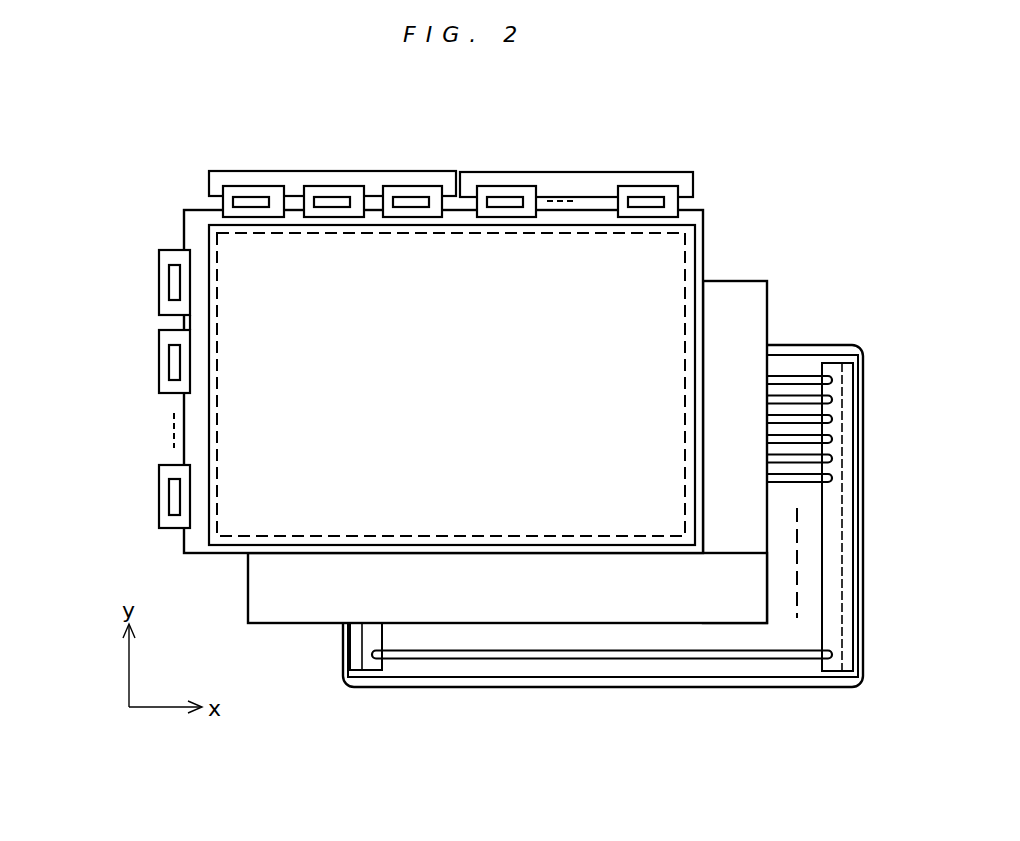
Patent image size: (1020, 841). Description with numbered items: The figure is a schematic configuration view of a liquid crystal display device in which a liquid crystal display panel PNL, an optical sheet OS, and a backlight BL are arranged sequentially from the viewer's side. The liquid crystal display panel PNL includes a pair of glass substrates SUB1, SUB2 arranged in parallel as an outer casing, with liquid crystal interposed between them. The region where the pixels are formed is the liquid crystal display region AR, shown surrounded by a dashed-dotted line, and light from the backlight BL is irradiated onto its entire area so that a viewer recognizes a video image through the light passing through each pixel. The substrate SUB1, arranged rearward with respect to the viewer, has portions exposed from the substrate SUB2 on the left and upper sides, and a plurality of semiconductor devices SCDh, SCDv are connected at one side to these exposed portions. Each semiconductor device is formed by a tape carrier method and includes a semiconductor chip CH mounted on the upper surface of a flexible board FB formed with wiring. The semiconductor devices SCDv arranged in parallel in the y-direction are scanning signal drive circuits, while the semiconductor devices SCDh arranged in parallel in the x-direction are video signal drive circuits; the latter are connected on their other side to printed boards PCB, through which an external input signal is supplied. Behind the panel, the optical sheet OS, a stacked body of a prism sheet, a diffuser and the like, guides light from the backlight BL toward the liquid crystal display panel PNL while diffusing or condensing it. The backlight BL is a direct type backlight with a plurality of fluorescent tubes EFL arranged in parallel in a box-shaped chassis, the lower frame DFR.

The semiconductor device SCDh is at (252, 186).
The semiconductor device SCDv is at (139, 361).
The printed board PCB is at (325, 172).
The liquid crystal display panel PNL is at (452, 306).
The optical sheet OS is at (740, 267).
The substrate SUB1 is at (203, 207).
The substrate SUB2 is at (238, 553).
The semiconductor chip CH is at (168, 287).
The flexible board FB is at (139, 304).
The liquid crystal display region AR is at (451, 384).
The fluorescent tube EFL is at (582, 653).
The backlight BL is at (603, 560).
The lower frame DFR is at (817, 690).